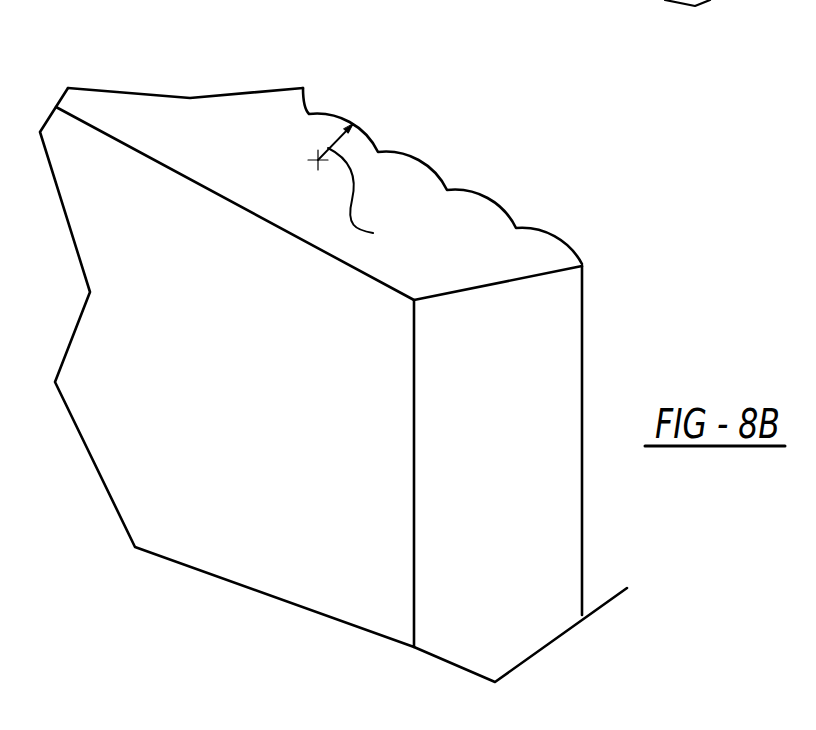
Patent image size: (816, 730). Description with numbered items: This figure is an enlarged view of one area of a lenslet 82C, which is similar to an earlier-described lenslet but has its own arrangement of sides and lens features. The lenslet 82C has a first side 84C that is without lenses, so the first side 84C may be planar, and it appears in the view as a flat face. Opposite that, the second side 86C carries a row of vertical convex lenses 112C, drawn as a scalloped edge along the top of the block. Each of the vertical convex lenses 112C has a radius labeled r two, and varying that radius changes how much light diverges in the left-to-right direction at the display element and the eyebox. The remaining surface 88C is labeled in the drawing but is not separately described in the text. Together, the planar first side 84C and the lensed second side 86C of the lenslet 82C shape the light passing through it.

The lenslet 82C is at (190, 118).
The first side 84C is at (185, 418).
The second side 86C is at (582, 348).
The bottom face of cutting insert 88C is at (522, 593).
The vertical convex lenses 112C is at (490, 198).